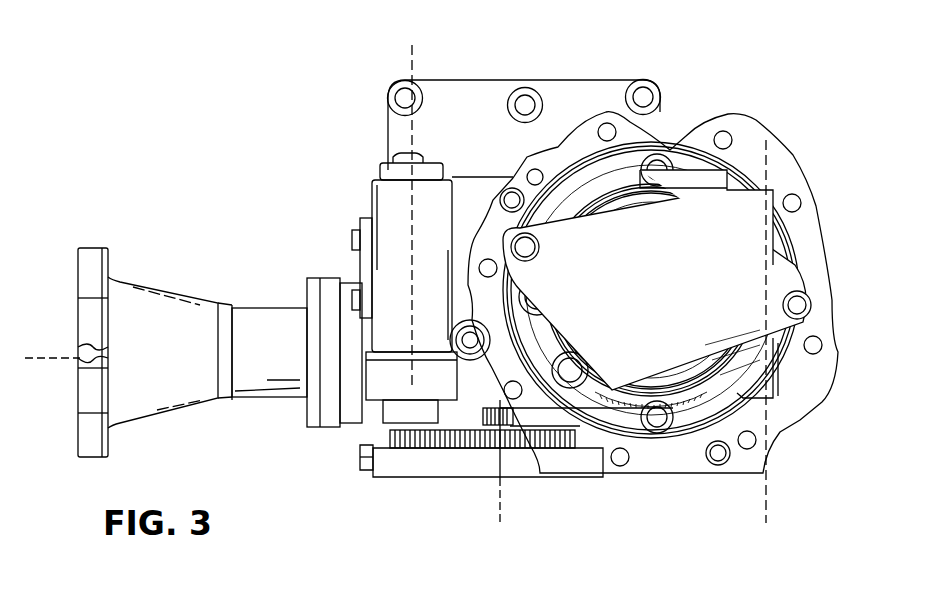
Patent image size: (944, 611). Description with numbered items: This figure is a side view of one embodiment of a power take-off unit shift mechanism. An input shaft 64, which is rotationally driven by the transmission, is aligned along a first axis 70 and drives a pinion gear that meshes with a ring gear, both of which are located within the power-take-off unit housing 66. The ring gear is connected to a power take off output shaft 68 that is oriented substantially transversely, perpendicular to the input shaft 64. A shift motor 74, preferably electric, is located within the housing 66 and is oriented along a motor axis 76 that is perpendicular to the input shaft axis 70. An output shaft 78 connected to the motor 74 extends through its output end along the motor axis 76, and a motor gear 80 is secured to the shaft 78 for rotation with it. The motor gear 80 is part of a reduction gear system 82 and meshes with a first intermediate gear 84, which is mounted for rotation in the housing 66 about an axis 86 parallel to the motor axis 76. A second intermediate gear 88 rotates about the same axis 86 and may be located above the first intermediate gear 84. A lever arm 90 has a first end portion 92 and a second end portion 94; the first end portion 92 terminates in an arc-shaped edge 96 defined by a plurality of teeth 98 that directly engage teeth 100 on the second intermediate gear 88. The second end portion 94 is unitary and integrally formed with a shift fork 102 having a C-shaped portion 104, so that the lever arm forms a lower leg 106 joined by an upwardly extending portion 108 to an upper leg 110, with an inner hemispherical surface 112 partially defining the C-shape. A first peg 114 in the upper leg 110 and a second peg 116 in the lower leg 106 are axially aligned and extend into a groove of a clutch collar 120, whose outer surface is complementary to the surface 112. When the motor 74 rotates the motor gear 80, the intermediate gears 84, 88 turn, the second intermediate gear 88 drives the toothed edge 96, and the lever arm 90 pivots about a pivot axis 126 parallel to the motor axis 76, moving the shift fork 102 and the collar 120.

The input shaft 64 is at (99, 248).
The power-take-off unit housing 66 is at (487, 80).
The power take off output shaft 68 is at (783, 277).
The first axis 70 is at (42, 358).
The shift motor 74 is at (372, 195).
The motor axis 76 is at (408, 58).
The output shaft 78 is at (392, 427).
The motor gear 80 is at (385, 450).
The reduction gear system 82 is at (488, 498).
The first intermediate gear 84 is at (545, 450).
The axis 86 is at (504, 522).
The second intermediate gear 88 is at (480, 435).
The lever arm 90 is at (606, 455).
The first end portion 92 is at (615, 394).
The second end portion 94 is at (714, 372).
The edge 96 is at (570, 382).
The teeth 98 is at (520, 378).
The teeth 100 is at (558, 450).
The shift fork 102 is at (800, 197).
The C-shaped portion 104 is at (768, 392).
The lower leg 106 is at (688, 430).
The upwardly extending portion 108 is at (775, 228).
The upper leg 110 is at (700, 180).
The inner hemispherical surface 112 is at (752, 195).
The first peg 114 is at (655, 172).
The second peg 116 is at (672, 405).
The clutch collar 120 is at (713, 243).
The pivot axis 126 is at (769, 510).